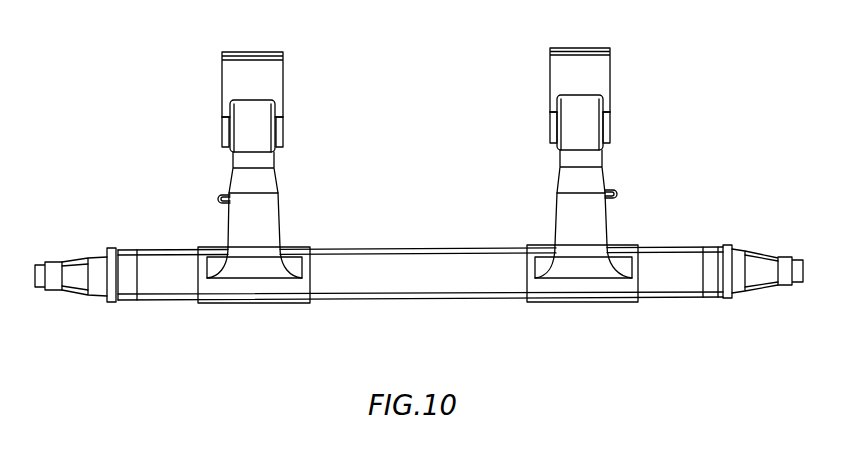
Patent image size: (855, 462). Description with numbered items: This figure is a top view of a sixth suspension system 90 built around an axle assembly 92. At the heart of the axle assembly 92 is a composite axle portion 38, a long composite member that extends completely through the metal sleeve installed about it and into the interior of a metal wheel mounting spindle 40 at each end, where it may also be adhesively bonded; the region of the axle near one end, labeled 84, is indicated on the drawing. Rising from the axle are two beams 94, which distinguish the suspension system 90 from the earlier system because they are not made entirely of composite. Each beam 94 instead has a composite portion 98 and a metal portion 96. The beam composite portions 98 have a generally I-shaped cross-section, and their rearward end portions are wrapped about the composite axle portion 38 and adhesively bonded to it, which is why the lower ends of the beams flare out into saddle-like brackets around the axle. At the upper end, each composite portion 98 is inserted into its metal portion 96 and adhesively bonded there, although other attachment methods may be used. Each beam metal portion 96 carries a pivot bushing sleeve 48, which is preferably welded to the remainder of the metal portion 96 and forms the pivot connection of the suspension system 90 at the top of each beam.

The suspension system 90 is at (123, 98).
The composite axle portion 38 is at (467, 300).
The axle assembly 92 is at (418, 239).
The sleeve 84 is at (150, 304).
The wheel mounting spindle 40 is at (73, 258).
The pivot bushing sleeve 48 is at (283, 72).
The beam metal portion 96 is at (283, 132).
The beam 94 is at (229, 177).
The beam composite portion 98 is at (280, 210).